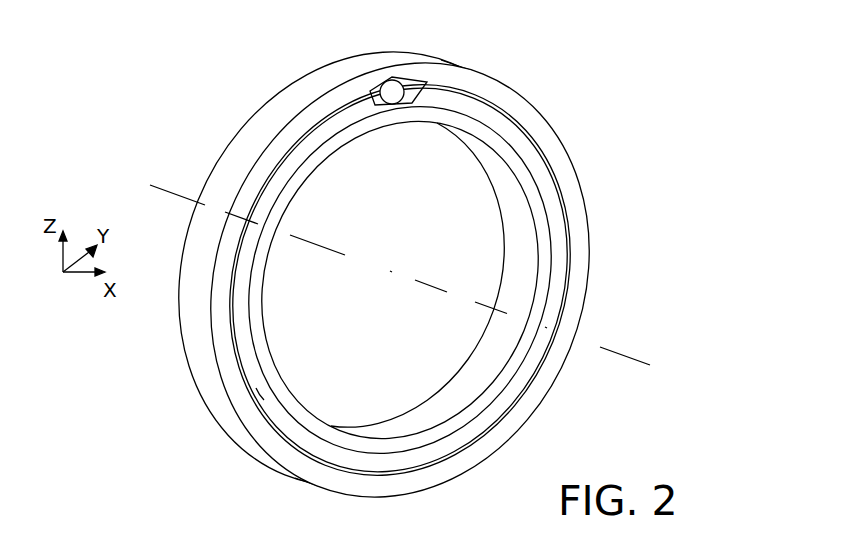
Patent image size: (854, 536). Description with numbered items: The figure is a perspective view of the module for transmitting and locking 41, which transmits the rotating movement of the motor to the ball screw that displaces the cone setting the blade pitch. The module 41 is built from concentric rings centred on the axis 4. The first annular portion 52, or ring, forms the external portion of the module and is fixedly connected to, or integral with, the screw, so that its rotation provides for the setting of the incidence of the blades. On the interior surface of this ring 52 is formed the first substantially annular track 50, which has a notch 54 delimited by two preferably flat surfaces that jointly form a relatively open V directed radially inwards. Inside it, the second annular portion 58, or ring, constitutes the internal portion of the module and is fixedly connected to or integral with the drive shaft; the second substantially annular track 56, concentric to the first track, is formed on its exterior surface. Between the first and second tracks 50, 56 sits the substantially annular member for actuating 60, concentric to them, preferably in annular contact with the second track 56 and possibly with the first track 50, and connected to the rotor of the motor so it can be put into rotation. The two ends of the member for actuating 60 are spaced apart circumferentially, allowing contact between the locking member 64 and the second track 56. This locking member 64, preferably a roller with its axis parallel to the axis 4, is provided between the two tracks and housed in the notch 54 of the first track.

The module for transmitting and locking 41 is at (627, 122).
The first annular portion 52 is at (508, 82).
The first substantially annular track 50 is at (297, 134).
The notch 54 is at (363, 98).
The locking member 64 is at (392, 92).
The second substantially annular track 56 is at (246, 335).
The second annular portion 58 is at (307, 420).
The member for actuating 60 is at (262, 395).
The axis 4 is at (631, 362).